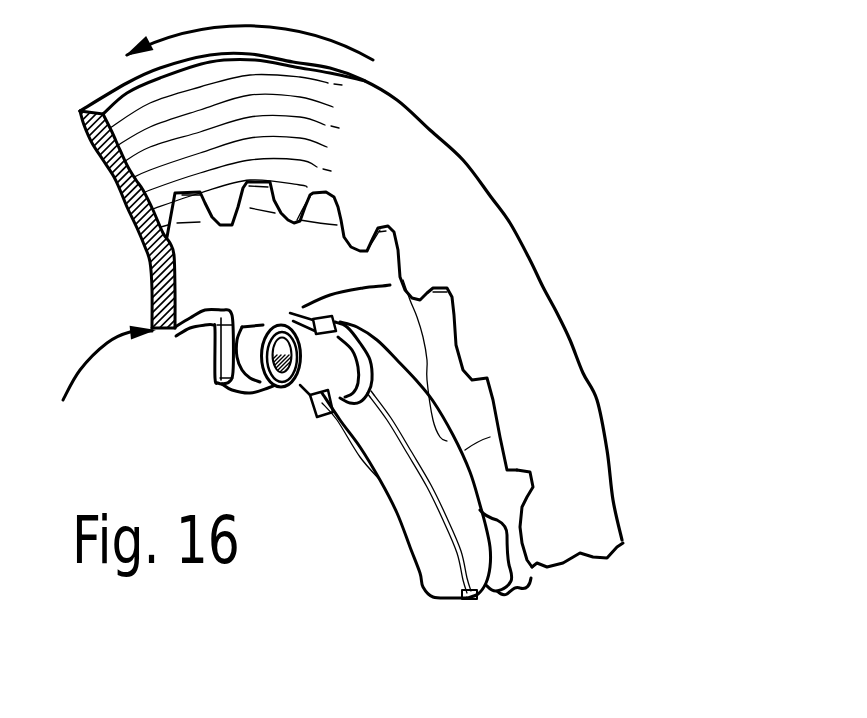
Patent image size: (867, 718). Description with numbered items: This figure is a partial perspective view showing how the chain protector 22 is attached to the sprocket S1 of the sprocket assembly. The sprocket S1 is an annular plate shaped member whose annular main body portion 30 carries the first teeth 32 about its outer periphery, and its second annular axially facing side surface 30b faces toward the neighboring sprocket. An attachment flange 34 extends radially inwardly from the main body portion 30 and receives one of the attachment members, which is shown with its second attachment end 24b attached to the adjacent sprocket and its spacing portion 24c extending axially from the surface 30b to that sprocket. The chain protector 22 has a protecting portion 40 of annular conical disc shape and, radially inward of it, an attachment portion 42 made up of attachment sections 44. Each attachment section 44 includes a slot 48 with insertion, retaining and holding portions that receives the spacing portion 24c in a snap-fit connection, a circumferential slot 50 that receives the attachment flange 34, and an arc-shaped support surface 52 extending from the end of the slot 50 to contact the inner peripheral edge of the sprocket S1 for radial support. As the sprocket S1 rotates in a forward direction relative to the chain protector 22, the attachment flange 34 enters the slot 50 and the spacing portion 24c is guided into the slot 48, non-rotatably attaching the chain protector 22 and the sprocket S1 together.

The chain protector 22 is at (462, 126).
The protecting portion 40 is at (470, 200).
The first teeth 32 is at (525, 481).
The sprocket S1 is at (473, 339).
The annular main body portion 30 is at (153, 304).
The second annular axially facing side surface 30b is at (248, 288).
The attachment flange 34 is at (220, 348).
The spacing portion 24c is at (249, 368).
The second attachment end 24b is at (300, 385).
The circumferential slot 50 is at (390, 285).
The slot 48 is at (347, 394).
The attachment section 44 is at (403, 487).
The attachment portion 42 is at (413, 582).
The arc-shaped support surface 52 is at (510, 578).